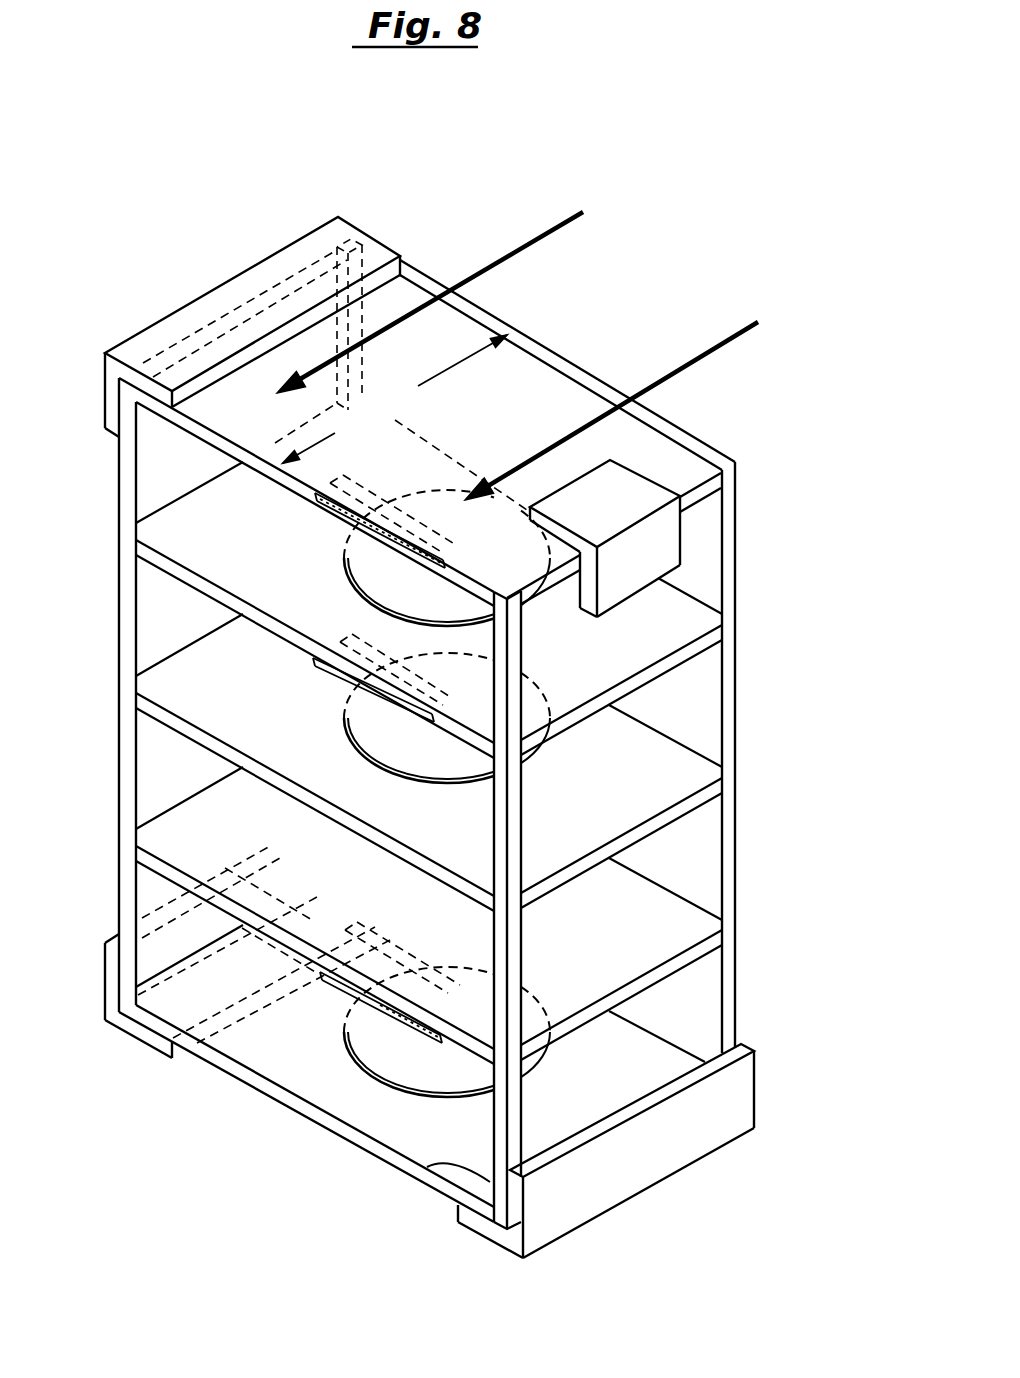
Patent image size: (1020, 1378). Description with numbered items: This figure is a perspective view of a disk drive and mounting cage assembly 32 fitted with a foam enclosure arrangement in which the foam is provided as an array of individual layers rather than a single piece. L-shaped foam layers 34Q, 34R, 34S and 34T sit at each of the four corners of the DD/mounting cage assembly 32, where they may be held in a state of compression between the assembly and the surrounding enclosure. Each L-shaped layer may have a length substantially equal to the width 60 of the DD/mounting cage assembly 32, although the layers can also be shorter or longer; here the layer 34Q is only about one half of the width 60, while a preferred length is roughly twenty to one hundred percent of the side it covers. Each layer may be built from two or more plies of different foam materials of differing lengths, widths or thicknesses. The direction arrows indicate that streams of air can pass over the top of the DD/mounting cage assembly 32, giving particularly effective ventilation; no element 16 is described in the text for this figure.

The DD/mounting cage assembly 32 is at (573, 337).
The L-shaped foam layer 34T is at (253, 288).
The L-shaped foam layer 34Q is at (655, 548).
The L-shaped foam layer 34S is at (137, 1028).
The L-shaped foam layer 34R is at (593, 1170).
The width of the DD/mounting cage assembly 60 is at (395, 351).
The wafer 16 is at (427, 1165).